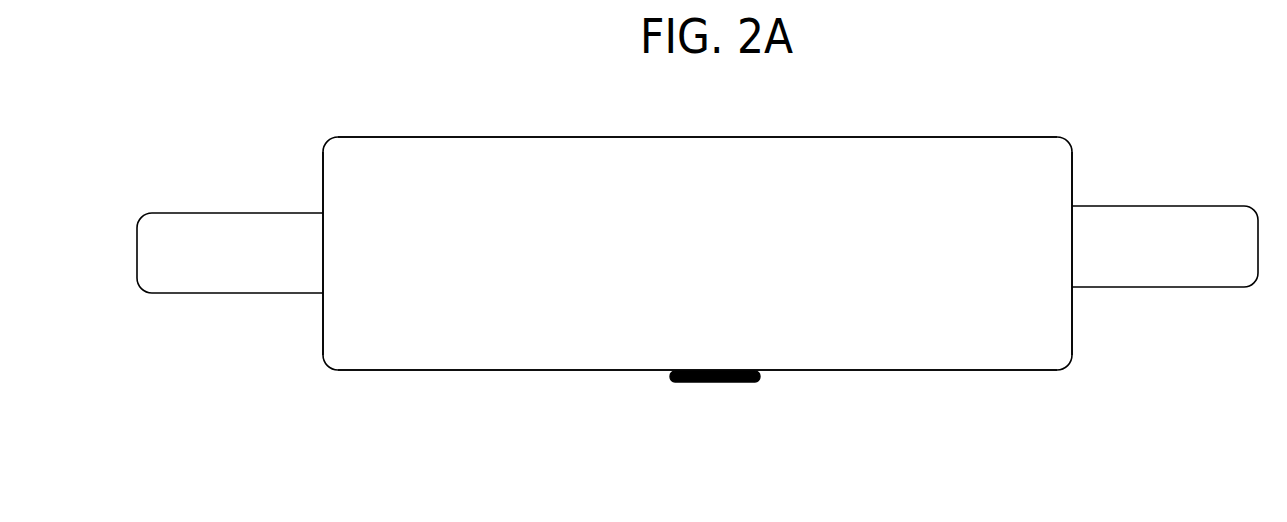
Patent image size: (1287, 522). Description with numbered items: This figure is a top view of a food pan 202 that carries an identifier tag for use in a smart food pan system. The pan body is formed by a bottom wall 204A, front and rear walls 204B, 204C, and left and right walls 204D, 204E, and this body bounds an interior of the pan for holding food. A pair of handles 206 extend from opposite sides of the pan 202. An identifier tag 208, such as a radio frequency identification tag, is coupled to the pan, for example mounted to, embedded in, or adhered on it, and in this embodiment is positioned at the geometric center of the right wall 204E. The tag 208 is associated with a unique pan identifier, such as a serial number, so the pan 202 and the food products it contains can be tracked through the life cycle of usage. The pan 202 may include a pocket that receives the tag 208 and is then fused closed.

The food pan 202 is at (268, 160).
The bottom wall 204A is at (723, 264).
The front wall 204B is at (323, 330).
The rear wall 204C is at (1072, 343).
The left wall 204D is at (963, 137).
The right wall 204E is at (485, 370).
The handles 206 is at (170, 213).
The identifier tag 208 is at (735, 382).